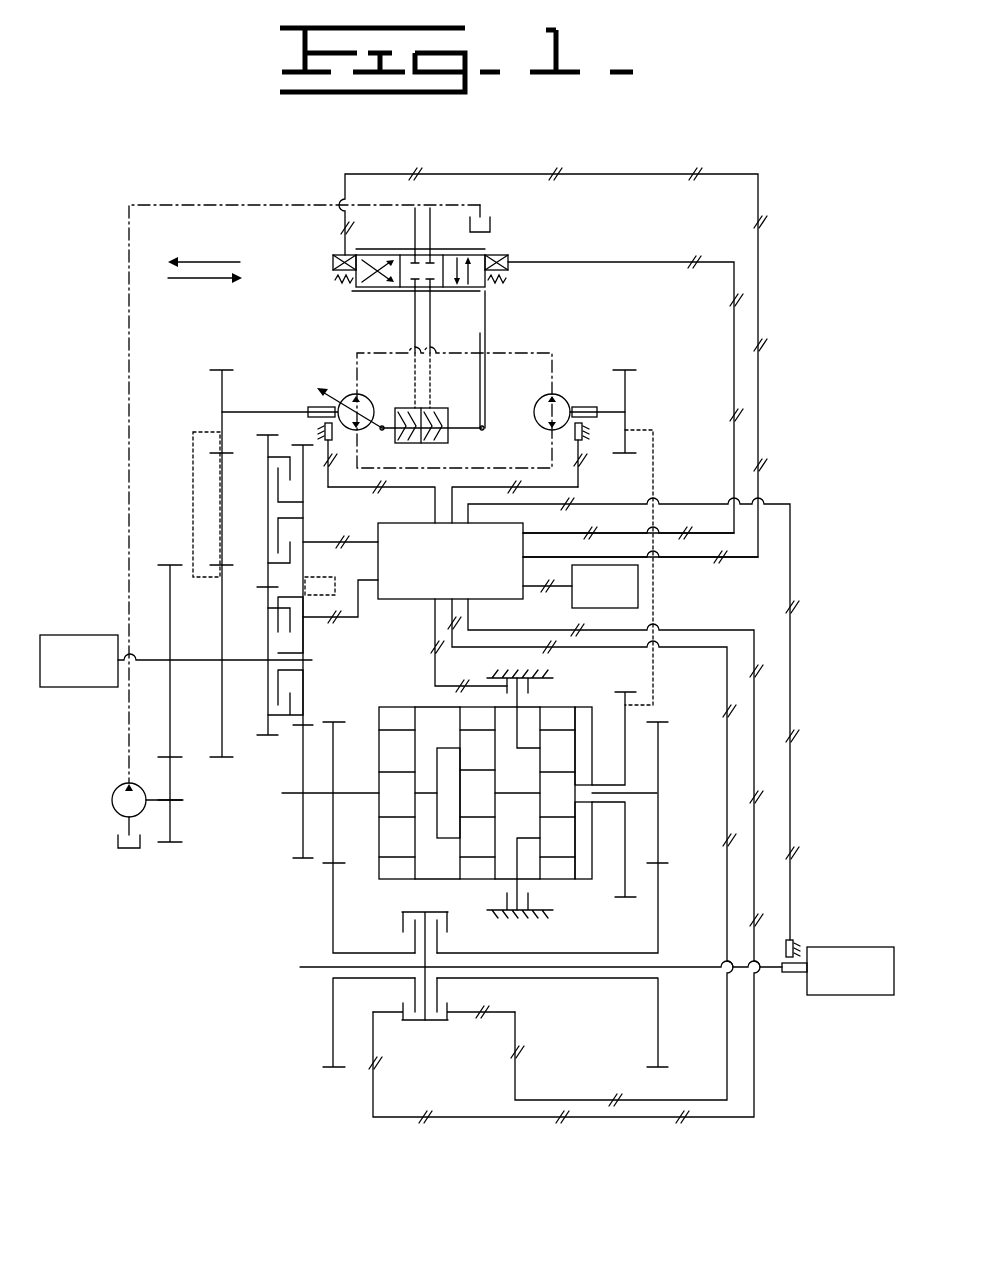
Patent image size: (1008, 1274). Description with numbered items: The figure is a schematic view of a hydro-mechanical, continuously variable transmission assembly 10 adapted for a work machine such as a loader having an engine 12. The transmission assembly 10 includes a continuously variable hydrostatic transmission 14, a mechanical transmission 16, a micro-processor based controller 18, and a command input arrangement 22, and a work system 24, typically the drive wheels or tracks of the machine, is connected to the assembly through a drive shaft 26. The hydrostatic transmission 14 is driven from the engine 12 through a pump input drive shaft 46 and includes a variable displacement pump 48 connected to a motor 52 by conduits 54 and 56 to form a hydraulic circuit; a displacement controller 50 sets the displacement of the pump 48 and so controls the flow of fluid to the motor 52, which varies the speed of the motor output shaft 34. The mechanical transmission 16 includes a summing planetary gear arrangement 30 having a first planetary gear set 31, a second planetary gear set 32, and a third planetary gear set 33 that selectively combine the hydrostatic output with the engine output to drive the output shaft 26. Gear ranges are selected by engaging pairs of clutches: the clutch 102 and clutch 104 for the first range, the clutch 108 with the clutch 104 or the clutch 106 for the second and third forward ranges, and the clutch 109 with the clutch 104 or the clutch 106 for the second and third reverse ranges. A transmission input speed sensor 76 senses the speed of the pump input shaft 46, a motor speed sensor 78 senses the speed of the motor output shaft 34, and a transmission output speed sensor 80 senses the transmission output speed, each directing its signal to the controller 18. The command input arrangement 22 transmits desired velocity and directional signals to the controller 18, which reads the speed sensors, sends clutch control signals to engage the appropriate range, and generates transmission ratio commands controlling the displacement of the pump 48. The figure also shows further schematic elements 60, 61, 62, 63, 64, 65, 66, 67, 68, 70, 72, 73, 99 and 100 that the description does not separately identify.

The transmission assembly 10 is at (157, 138).
The engine 12 is at (70, 632).
The continuously variable hydrostatic transmission 14 is at (614, 340).
The mechanical transmission 16 is at (212, 923).
The controller 18 is at (402, 600).
The command input arrangement 22 is at (568, 593).
The work system 24 is at (847, 947).
The drive shaft 26 is at (313, 967).
The summing planetary gear arrangement 30 is at (382, 702).
The first planetary gear set 31 is at (389, 880).
The second planetary gear set 32 is at (461, 879).
The third planetary gear set 33 is at (577, 880).
The motor output shaft 34 is at (578, 405).
The pump input drive shaft 46 is at (312, 405).
The variable displacement pump 48 is at (368, 373).
The displacement controller 50 is at (390, 442).
The motor 52 is at (538, 395).
The conduit 54 is at (582, 353).
The conduit 56 is at (497, 467).
The control valve 60 is at (308, 340).
The first solenoid 61 is at (331, 257).
The second solenoid 62 is at (518, 267).
The valve body 63 is at (353, 289).
The pressure line 64 is at (486, 335).
The control line 65 is at (602, 175).
The charge pump 66 is at (115, 805).
The control line 67 is at (630, 262).
The centering springs 68 is at (424, 407).
The pilot line 70 is at (437, 335).
The pilot line 72 is at (410, 335).
The reservoir 73 is at (492, 222).
The transmission input speed sensor 76 is at (318, 423).
The motor speed sensor 78 is at (587, 428).
The transmission output speed sensor 80 is at (789, 940).
The reverse direction 99 is at (218, 262).
The forward direction 100 is at (197, 278).
The clutch 102 is at (530, 690).
The clutch 104 is at (403, 925).
The clutch 106 is at (447, 925).
The clutch 108 is at (268, 462).
The clutch 109 is at (267, 695).